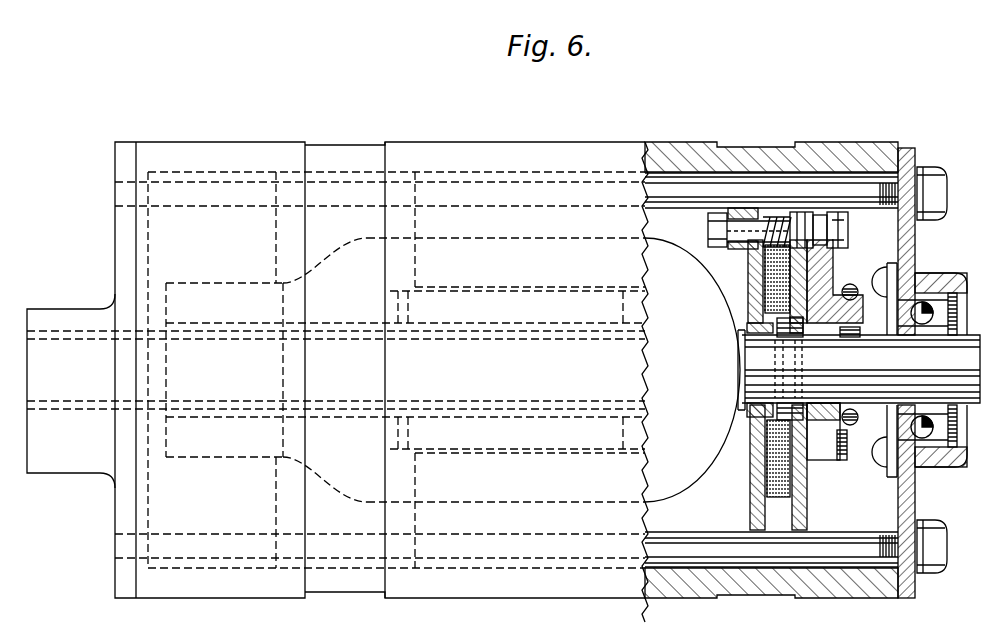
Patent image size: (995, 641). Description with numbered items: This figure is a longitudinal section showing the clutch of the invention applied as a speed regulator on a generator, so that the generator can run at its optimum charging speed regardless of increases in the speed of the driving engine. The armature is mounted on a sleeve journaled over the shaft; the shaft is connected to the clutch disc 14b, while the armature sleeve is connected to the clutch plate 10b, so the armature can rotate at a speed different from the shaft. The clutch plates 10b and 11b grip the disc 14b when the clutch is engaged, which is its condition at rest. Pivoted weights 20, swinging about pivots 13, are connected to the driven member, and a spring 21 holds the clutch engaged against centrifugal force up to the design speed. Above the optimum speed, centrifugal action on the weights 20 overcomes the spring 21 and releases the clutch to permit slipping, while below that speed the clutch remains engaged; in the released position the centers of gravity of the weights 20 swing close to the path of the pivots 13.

The pivots 13 is at (848, 221).
The weights 20 is at (833, 264).
The spring 21 is at (855, 343).
The clutch plate 10b is at (748, 262).
The clutch plate 11b is at (802, 497).
The clutch disc 14b is at (765, 423).